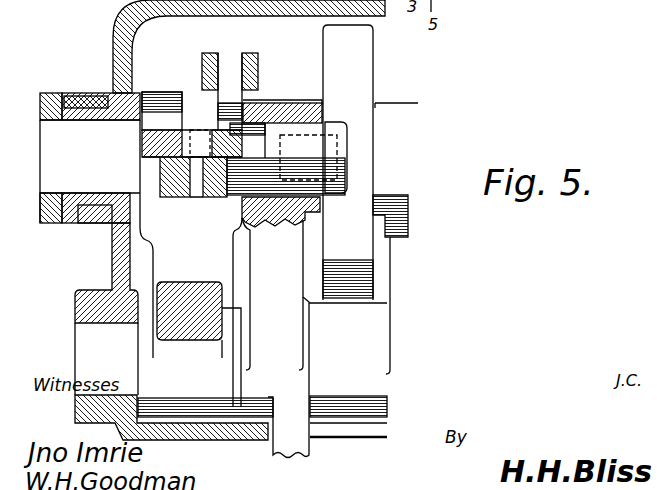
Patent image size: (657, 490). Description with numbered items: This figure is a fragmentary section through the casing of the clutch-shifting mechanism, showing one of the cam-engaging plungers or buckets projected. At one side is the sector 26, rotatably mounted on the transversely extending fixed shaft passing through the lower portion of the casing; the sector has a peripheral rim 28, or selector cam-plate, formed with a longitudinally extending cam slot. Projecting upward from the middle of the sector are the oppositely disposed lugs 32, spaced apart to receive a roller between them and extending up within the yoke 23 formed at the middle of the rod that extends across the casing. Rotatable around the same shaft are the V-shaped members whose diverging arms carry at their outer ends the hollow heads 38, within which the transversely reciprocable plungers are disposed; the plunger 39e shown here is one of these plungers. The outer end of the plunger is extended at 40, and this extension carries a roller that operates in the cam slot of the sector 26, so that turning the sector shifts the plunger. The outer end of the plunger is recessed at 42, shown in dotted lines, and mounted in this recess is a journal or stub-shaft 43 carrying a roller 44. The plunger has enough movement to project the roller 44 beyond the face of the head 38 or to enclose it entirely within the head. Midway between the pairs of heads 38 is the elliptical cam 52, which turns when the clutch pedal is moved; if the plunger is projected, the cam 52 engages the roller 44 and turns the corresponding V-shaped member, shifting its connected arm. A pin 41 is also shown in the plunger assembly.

The yoke 23 is at (201, 67).
The lugs 32 is at (233, 67).
The recess 42 is at (300, 102).
The cam 52 is at (363, 72).
The hollow head 38 is at (276, 120).
The slide block 39e is at (313, 130).
The pin 41 is at (200, 123).
The stub-shaft 43 is at (308, 157).
The peripheral rim 28 is at (142, 148).
The plunger extension 40 is at (184, 198).
The roller 44 is at (335, 196).
The sector 26 is at (189, 295).